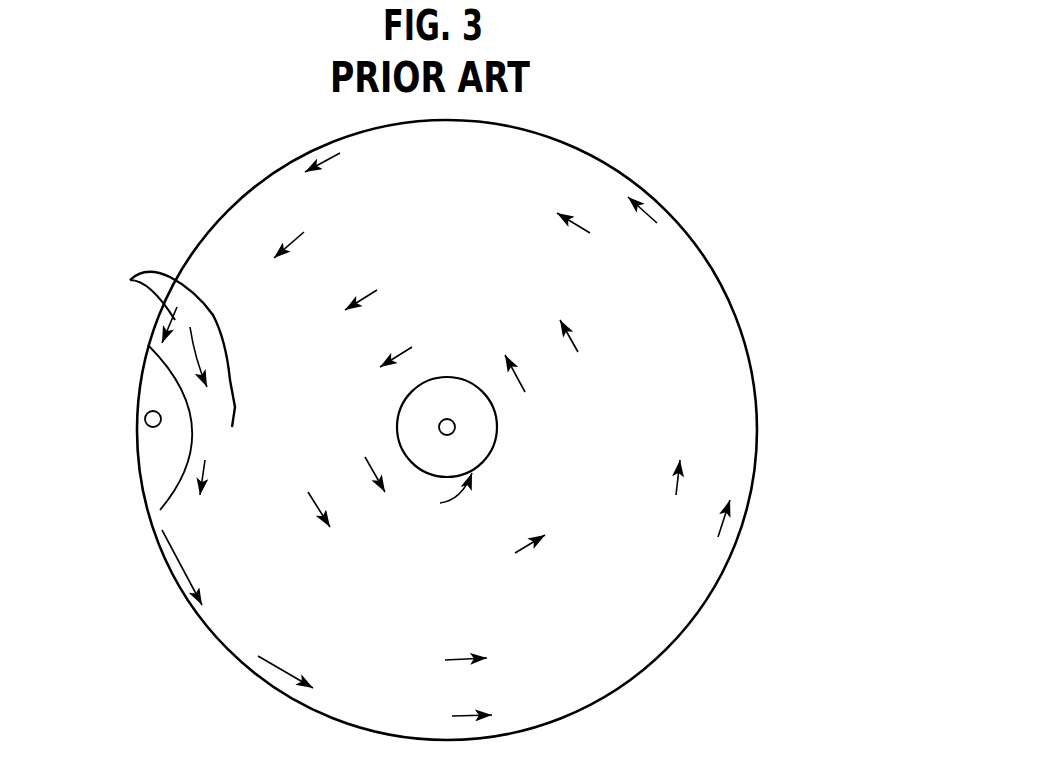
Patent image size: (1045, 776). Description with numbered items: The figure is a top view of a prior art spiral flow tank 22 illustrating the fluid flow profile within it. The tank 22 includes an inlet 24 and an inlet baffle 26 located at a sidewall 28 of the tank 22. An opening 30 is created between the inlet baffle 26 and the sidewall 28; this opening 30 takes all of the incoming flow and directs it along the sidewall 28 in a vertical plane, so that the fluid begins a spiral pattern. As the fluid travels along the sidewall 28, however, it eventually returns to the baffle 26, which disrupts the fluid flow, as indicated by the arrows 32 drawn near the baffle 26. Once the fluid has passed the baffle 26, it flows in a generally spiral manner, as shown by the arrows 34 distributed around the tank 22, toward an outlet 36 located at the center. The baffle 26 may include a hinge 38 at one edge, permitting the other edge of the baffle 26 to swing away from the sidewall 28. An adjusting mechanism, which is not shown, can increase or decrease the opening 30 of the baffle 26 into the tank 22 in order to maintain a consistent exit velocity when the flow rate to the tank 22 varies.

The tank 22 is at (600, 160).
The inlet 24 is at (146, 412).
The inlet baffle 26 is at (190, 449).
The sidewall 28 is at (143, 483).
The opening 30 is at (155, 509).
The arrows 32 is at (151, 334).
The arrows 34 is at (578, 343).
The outlet 36 is at (497, 433).
The hinge 38 is at (148, 345).